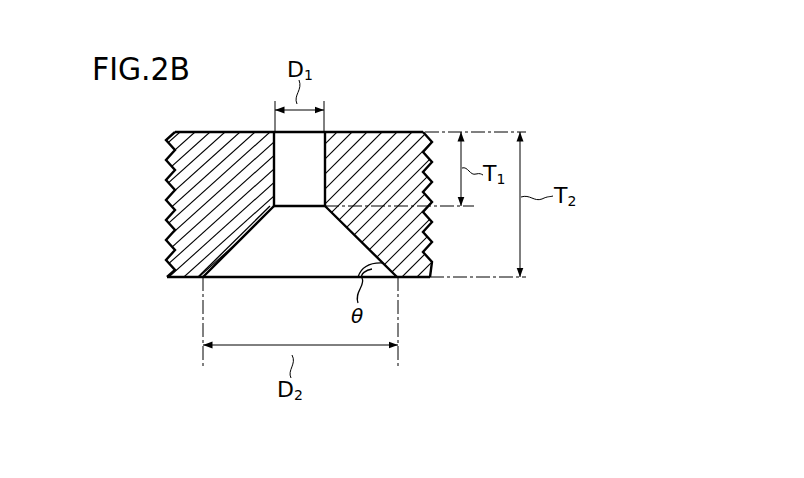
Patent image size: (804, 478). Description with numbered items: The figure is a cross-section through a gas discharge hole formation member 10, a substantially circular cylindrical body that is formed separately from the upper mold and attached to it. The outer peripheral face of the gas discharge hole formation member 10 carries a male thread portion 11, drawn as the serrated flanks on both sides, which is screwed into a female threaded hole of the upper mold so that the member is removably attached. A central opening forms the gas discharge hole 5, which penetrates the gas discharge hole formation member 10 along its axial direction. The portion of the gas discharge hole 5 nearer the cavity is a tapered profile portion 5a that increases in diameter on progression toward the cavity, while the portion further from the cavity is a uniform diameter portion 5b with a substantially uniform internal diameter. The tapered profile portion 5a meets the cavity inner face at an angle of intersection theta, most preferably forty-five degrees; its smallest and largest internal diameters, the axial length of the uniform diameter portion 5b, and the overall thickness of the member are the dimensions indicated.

The gas discharge hole formation member 10 is at (434, 114).
The male thread portion 11 is at (168, 200).
The gas discharge hole 5 is at (299, 270).
The tapered profile portion 5a is at (238, 252).
The uniform diameter portion 5b is at (288, 188).